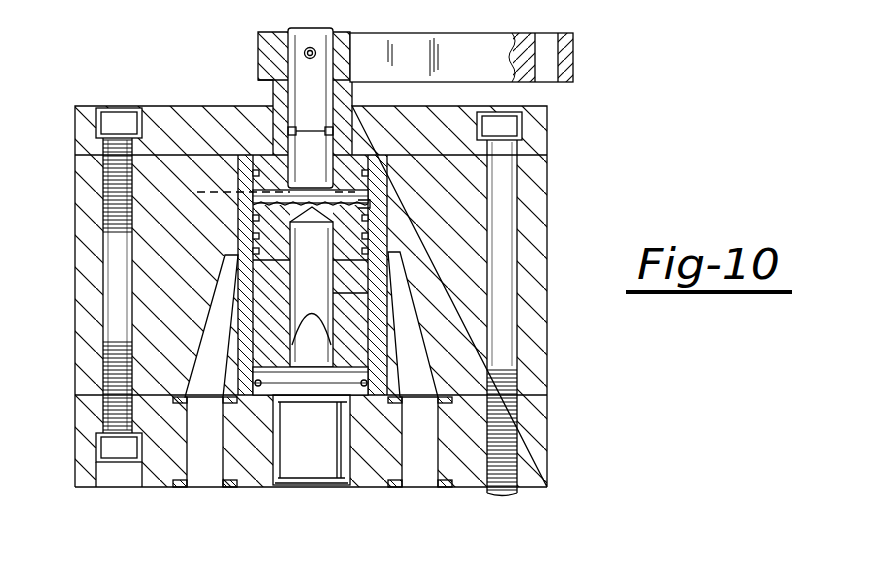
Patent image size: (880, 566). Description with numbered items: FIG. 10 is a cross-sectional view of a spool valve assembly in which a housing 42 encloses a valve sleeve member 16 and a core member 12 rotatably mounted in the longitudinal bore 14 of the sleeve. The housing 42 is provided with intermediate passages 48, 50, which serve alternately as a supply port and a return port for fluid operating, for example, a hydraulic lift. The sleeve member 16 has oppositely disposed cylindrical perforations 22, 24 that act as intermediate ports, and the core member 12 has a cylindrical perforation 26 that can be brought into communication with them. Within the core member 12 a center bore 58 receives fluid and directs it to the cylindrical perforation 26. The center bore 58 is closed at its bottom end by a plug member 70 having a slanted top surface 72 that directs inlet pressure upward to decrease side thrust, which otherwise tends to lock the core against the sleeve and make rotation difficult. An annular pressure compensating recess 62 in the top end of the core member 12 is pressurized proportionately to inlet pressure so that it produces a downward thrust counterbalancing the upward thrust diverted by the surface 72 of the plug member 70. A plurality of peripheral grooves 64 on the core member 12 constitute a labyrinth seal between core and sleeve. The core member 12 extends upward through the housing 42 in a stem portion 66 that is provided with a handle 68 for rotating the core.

The housing 42 is at (68, 428).
The stem portion 66 is at (352, 80).
The handle 68 is at (573, 50).
The peripheral grooves 64 is at (237, 220).
The cylindrical perforation 22 is at (385, 290).
The sleeve member 16 is at (400, 177).
The longitudinal bore 14 is at (398, 195).
The core member 12 is at (400, 215).
The cylindrical perforation 26 is at (353, 293).
The center bore 58 is at (321, 260).
The slanted top surface 72 is at (384, 336).
The plug member 70 is at (309, 358).
The cylindrical perforation 24 is at (245, 287).
The intermediate passage 50 is at (200, 466).
The intermediate passage 48 is at (438, 458).
The annular pressure compensating recess 62 is at (264, 193).